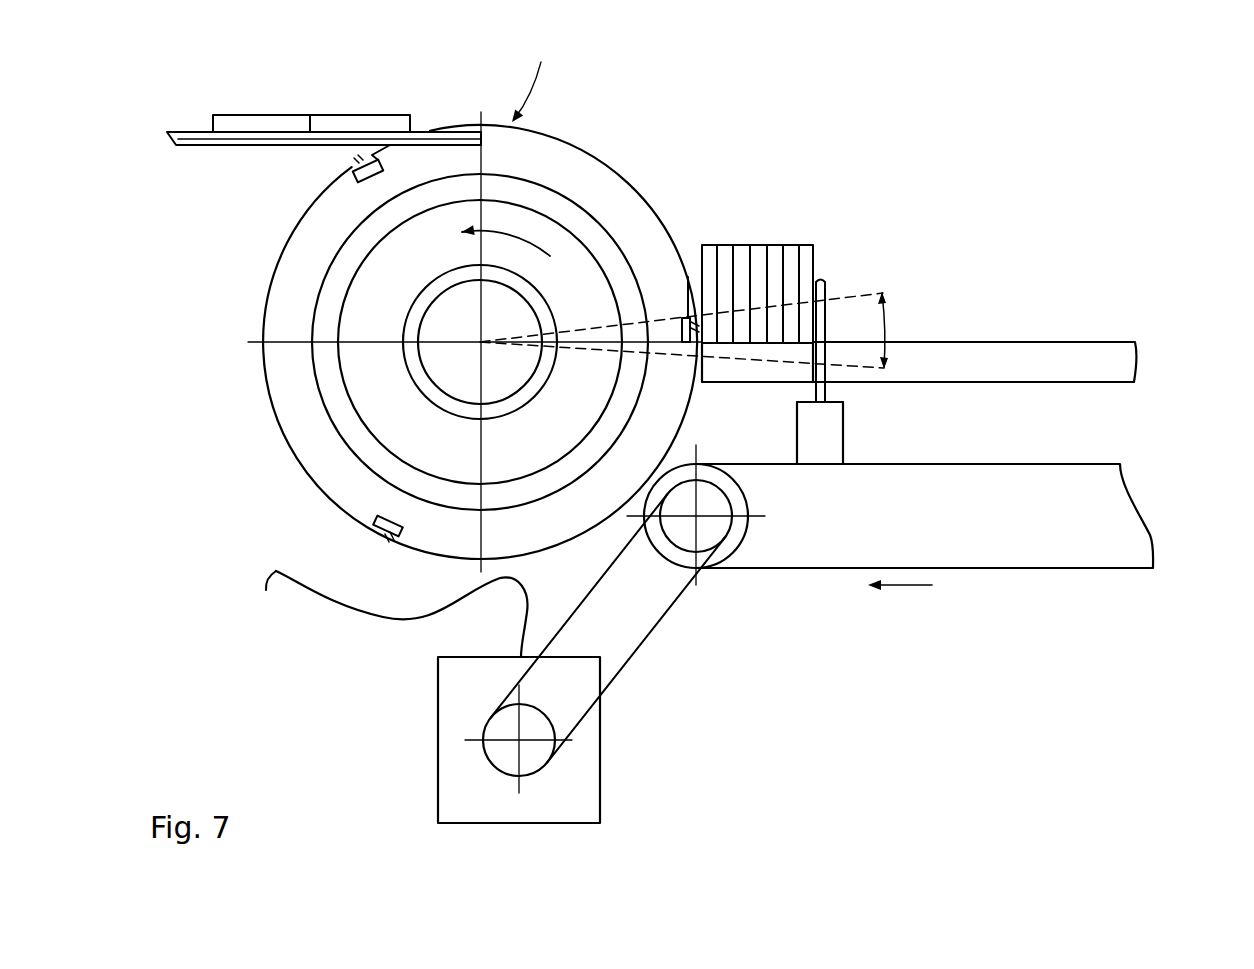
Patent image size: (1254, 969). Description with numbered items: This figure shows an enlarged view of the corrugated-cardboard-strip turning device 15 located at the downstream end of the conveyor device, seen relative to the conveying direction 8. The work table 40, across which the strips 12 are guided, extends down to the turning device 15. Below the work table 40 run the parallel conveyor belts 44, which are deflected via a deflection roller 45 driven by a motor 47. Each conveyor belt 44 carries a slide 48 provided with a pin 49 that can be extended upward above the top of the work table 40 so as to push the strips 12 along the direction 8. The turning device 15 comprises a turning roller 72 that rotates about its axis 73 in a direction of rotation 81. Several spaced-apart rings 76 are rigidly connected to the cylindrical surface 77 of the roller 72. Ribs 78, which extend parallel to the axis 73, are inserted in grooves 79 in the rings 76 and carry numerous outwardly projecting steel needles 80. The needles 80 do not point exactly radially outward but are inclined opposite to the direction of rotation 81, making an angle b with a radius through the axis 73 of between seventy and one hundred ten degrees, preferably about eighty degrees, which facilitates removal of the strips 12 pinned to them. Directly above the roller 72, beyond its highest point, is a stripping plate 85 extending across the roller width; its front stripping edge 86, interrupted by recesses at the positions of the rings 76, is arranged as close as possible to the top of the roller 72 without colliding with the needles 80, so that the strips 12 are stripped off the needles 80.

The direction 8 is at (900, 586).
The strips 12 is at (327, 118).
The corrugated-cardboard-strip turning device 15 is at (534, 77).
The work table 40 is at (1124, 360).
The conveyor belts 44 is at (1100, 464).
The deflection roller 45 is at (712, 533).
The motor 47 is at (456, 686).
The slide 48 is at (820, 449).
The pin 49 is at (821, 280).
The turning roller 72 is at (357, 378).
The axis 73 is at (480, 342).
The rings 76 is at (598, 173).
The cylindrical surface 77 is at (320, 353).
The ribs 78 is at (353, 171).
The grooves 79 is at (390, 518).
The needles 80 is at (387, 537).
The direction of rotation 81 is at (508, 233).
The stripping plate 85 is at (181, 138).
The front stripping edge 86 is at (483, 142).
The angle b is at (691, 330).